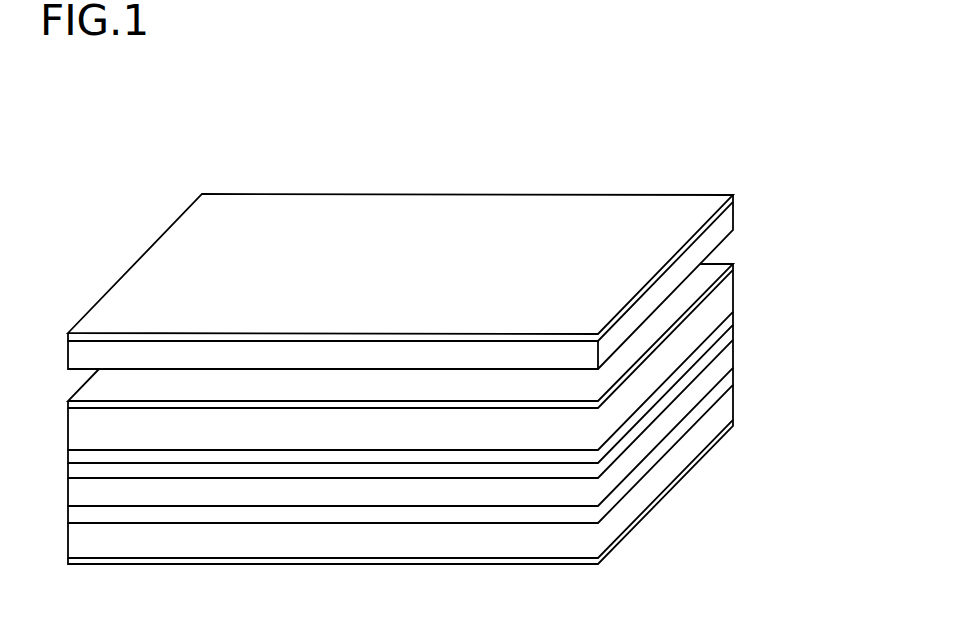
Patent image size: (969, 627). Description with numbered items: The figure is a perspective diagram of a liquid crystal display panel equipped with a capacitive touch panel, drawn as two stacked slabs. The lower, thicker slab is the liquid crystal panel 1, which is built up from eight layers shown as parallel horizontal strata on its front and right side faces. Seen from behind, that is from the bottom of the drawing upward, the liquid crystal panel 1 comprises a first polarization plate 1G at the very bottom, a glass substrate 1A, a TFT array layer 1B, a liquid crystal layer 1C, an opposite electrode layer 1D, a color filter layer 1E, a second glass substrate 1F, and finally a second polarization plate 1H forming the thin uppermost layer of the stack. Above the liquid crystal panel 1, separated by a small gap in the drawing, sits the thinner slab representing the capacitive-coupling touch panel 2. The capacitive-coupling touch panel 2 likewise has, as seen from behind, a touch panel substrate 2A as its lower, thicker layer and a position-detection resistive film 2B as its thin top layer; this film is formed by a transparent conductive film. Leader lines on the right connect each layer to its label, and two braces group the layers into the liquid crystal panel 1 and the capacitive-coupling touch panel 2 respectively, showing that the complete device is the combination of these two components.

The liquid crystal panel 1 is at (468, 389).
The glass substrate 1A is at (722, 417).
The TFT array layer 1B is at (720, 393).
The liquid crystal layer 1C is at (722, 367).
The opposite electrode layer 1D is at (733, 339).
The color filter layer 1E is at (723, 328).
The glass substrate 1F is at (722, 308).
The first polarization plate 1G is at (447, 492).
The second polarization plate 1H is at (722, 281).
The capacitive-coupling touch panel 2 is at (468, 247).
The touch panel substrate 2A is at (717, 231).
The position-detection resistive film 2B is at (733, 198).